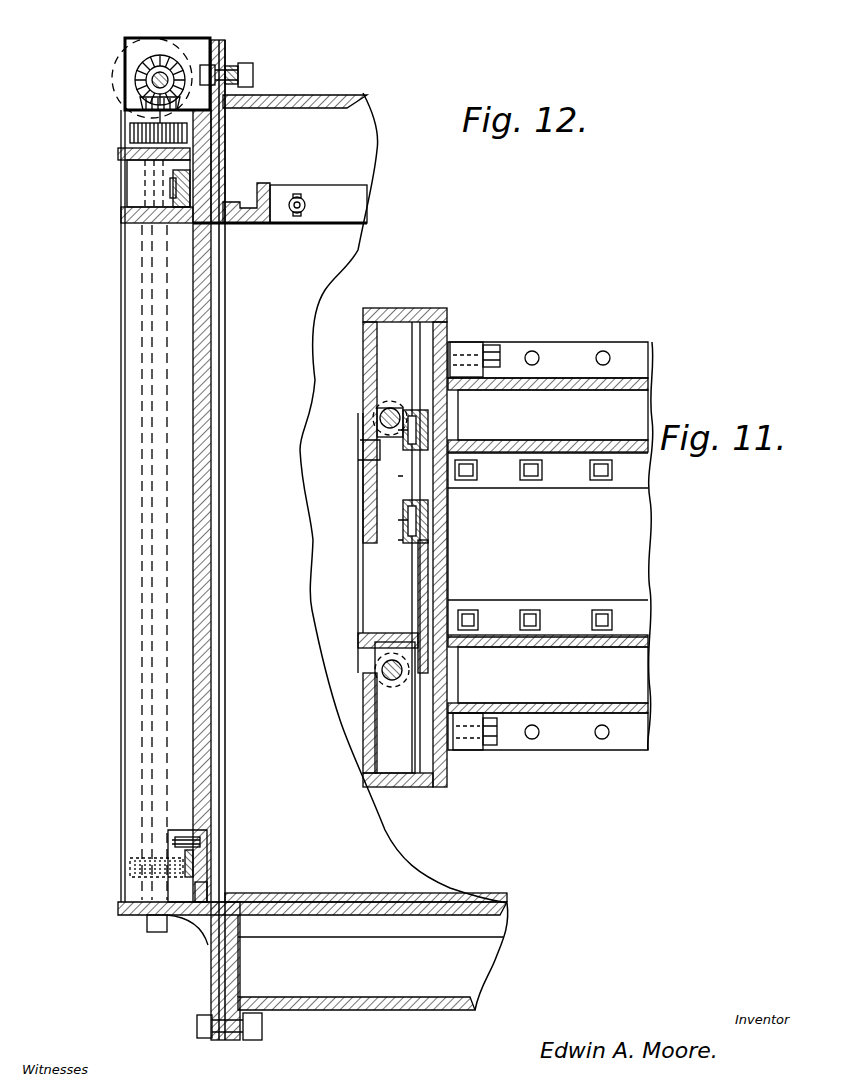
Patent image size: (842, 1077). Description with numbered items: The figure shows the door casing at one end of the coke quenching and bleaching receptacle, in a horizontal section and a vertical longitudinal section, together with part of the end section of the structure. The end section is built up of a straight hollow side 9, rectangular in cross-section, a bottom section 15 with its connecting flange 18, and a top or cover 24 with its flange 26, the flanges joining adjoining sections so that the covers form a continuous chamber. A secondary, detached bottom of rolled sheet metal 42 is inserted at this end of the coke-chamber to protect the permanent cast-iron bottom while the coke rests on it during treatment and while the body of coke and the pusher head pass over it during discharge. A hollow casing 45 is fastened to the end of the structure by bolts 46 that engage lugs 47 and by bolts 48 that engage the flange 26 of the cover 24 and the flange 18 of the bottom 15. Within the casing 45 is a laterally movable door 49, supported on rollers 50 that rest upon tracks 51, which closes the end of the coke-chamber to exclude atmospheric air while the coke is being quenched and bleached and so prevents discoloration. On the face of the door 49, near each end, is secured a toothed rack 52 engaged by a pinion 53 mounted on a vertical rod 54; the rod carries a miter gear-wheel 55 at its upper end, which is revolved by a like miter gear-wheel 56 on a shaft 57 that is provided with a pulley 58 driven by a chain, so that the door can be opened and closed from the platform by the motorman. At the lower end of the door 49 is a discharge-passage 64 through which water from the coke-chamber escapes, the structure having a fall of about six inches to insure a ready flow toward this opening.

In FIG. 11, the hollow side 9 is at (550, 546).
In FIG. 12, the bottom section 15 is at (313, 975).
In FIG. 12, the flange 18 is at (232, 1040).
In FIG. 12, the cover 24 is at (280, 148).
In FIG. 12, the flange 26 is at (230, 64).
In FIG. 12, the secondary bottom 42 is at (360, 893).
In FIG. 12, the hollow casing 45 is at (132, 798).
In FIG. 11, the hollow casing 45 is at (366, 370).
In FIG. 11, the bolt 46 is at (492, 348).
In FIG. 11, the lug 47 is at (466, 342).
In FIG. 12, the bolt 48 is at (248, 68).
In FIG. 11, the door 49 is at (404, 468).
In FIG. 12, the roller 50 is at (190, 176).
In FIG. 11, the roller 50 is at (403, 433).
In FIG. 12, the track 51 is at (182, 228).
In FIG. 12, the toothed rack 52 is at (188, 135).
In FIG. 12, the pinion 53 is at (130, 135).
In FIG. 12, the vertical rod 54 is at (158, 178).
In FIG. 11, the vertical rod 54 is at (380, 416).
In FIG. 12, the miter gear-wheel 55 is at (143, 103).
In FIG. 12, the miter gear-wheel 56 is at (135, 72).
In FIG. 12, the shaft 57 is at (152, 82).
In FIG. 12, the pulley 58 is at (120, 60).
In FIG. 12, the discharge-passage 64 is at (203, 890).